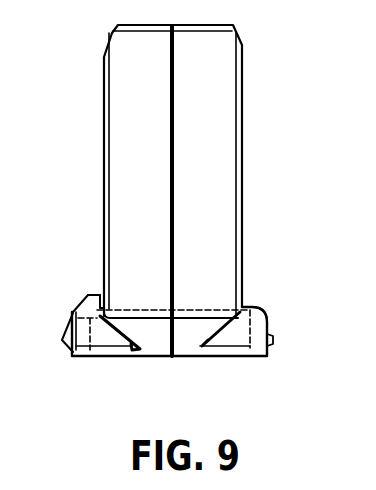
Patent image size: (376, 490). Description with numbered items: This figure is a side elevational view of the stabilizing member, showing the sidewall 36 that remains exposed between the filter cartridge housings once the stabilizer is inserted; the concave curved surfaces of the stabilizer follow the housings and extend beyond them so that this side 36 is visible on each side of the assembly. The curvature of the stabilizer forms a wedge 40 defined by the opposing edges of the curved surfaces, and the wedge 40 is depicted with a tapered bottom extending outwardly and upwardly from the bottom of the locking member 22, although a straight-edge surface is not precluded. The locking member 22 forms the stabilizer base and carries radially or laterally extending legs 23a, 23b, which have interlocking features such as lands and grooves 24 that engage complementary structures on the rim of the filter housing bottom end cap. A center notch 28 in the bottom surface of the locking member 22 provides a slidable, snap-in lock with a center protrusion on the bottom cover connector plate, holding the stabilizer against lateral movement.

The sidewall 36 is at (203, 148).
The wedge 40 is at (180, 338).
The locking member 22 is at (258, 313).
The center notch 28 is at (210, 306).
The leg 23a is at (268, 321).
The leg 23b is at (72, 313).
The lands and grooves 24 is at (273, 341).